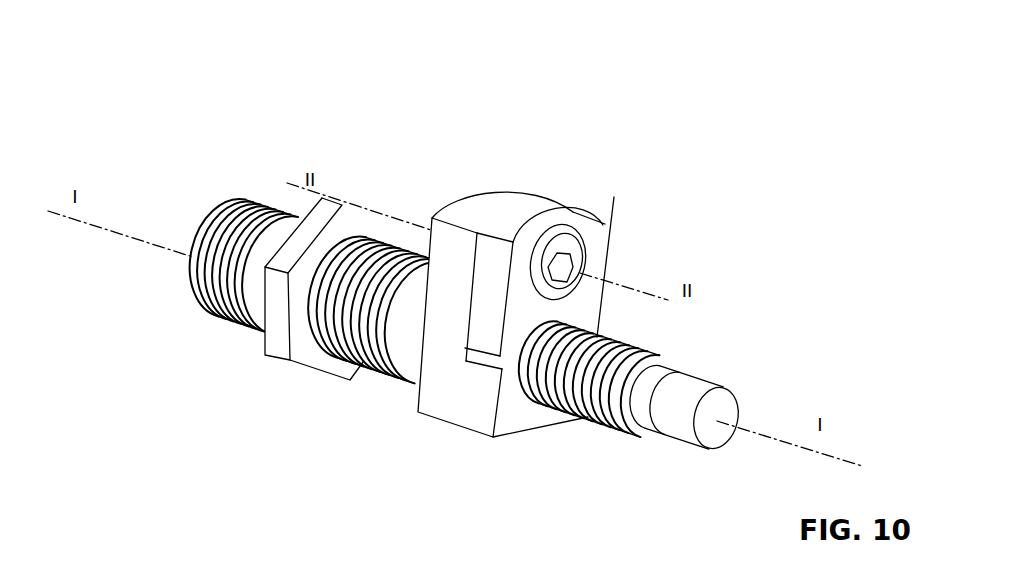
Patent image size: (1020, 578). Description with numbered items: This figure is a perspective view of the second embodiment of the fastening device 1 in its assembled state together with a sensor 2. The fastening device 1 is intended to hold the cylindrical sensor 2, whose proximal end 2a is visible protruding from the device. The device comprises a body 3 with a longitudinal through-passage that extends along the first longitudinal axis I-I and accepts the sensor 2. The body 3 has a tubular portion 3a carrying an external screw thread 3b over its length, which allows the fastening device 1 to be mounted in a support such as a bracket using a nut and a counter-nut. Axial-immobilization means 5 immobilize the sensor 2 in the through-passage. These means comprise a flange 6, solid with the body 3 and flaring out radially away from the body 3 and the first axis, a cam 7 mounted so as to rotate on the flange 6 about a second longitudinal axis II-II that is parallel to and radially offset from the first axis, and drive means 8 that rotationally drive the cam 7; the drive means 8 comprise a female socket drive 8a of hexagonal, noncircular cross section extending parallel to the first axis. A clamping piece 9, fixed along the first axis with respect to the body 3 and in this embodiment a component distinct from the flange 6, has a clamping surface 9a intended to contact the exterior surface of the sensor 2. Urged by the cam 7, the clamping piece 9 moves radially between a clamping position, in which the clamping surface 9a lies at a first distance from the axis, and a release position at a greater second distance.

The fastening device 1 is at (340, 114).
The sensor 2 is at (612, 437).
The proximal end 2a is at (685, 447).
The body 3 is at (384, 391).
The tubular portion 3a is at (248, 337).
The external screw thread 3b is at (228, 317).
The axial-immobilization means 5 is at (646, 197).
The flange 6 is at (526, 190).
The cam 7 is at (579, 239).
The drive means 8 is at (601, 250).
The socket drive 8a is at (566, 264).
The clamping piece 9 is at (568, 200).
The clamping surface 9a is at (548, 396).